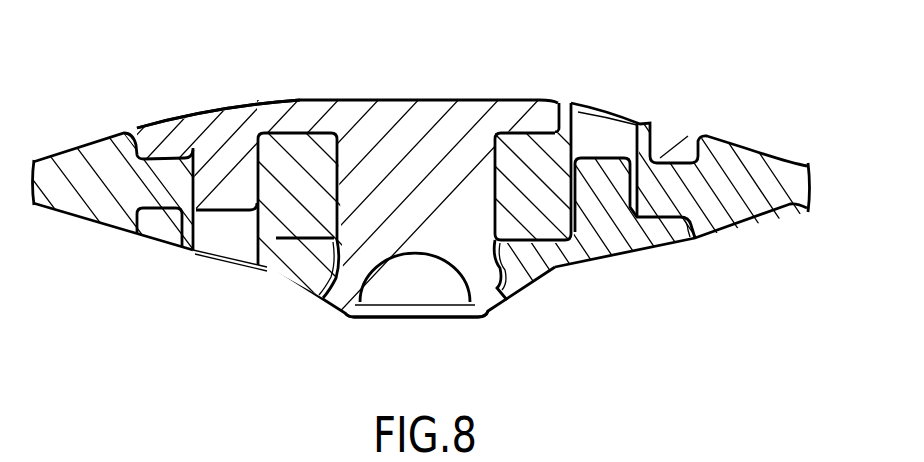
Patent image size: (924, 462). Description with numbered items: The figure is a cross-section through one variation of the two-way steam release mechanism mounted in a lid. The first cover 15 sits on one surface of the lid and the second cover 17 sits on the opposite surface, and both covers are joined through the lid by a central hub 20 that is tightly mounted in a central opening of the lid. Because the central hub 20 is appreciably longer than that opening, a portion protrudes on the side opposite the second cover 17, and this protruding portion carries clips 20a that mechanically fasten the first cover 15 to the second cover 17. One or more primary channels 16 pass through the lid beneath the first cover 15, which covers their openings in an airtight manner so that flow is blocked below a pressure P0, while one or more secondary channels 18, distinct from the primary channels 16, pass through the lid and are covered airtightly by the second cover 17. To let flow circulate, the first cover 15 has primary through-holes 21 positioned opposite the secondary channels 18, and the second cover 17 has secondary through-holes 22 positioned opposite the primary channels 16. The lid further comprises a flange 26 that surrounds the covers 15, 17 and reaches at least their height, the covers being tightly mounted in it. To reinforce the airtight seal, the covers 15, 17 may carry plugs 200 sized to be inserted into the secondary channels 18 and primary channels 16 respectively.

The first cover 15 is at (553, 255).
The primary channels 16 is at (597, 147).
The second cover 17 is at (338, 117).
The secondary channels 18 is at (233, 227).
The central hub 20 is at (427, 187).
The clips 20a is at (332, 312).
The primary through-holes 21 is at (190, 264).
The secondary through-holes 22 is at (612, 107).
The flange 26 is at (62, 187).
The plugs 200 is at (223, 161).